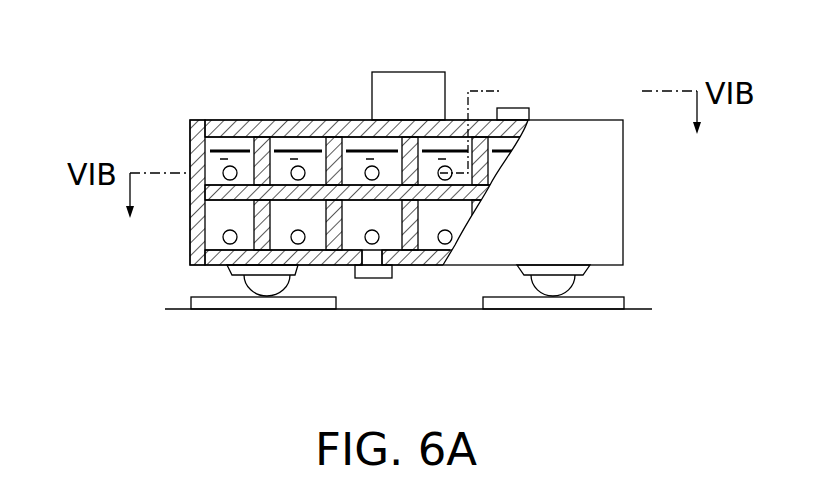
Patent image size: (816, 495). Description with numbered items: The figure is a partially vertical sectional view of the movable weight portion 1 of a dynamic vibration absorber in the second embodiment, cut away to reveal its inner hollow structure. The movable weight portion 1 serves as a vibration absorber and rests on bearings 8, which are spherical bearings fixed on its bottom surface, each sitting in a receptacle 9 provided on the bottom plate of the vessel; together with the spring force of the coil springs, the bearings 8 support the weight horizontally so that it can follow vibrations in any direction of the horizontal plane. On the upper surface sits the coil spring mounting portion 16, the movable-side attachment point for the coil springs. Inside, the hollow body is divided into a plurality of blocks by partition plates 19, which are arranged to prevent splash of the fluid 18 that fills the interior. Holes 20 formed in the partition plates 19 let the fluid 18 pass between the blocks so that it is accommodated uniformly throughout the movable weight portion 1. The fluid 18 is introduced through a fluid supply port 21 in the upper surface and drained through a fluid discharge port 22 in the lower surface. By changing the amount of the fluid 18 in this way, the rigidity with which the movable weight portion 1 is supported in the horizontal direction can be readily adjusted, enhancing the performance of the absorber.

The movable weight portion 1 is at (605, 120).
The bearings 8 is at (548, 283).
The receptacles 9 is at (593, 303).
The coil spring mounting portion 16 is at (430, 72).
The fluid 18 is at (317, 150).
The partition plates 19 is at (279, 156).
The holes 20 is at (329, 238).
The fluid supply port 21 is at (524, 108).
The fluid discharge port 22 is at (378, 271).